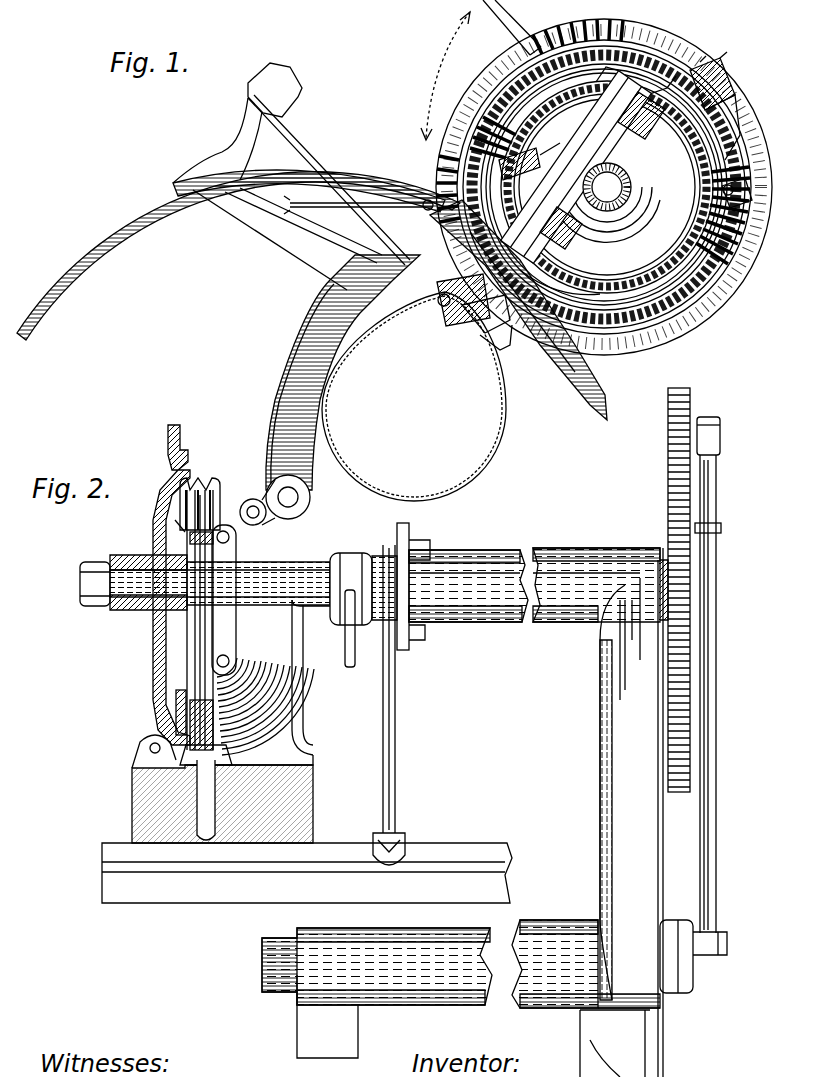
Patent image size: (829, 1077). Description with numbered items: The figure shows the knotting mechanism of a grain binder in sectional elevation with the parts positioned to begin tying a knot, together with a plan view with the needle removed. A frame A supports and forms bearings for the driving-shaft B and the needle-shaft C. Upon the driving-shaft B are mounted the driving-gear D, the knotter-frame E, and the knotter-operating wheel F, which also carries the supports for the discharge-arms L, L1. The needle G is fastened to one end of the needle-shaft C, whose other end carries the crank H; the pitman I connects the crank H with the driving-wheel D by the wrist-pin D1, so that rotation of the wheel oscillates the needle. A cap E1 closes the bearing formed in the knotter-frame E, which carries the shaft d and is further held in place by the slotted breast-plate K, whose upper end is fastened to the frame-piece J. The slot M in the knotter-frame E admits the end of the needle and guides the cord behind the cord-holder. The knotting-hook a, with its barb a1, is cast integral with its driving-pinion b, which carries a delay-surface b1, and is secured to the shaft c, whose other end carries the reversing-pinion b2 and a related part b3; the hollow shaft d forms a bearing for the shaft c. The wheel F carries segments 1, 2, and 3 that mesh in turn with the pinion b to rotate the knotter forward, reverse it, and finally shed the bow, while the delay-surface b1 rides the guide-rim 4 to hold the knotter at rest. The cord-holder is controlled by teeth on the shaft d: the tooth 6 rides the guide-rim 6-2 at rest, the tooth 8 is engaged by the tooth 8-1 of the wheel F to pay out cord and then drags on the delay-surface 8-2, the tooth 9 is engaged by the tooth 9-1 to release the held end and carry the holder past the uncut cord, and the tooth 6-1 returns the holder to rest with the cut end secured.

In FIG. 2, the frame A is at (621, 812).
In FIG. 1, the driving-shaft B is at (607, 187).
In FIG. 1, the needle-shaft C is at (330, 390).
In FIG. 2, the needle-shaft C is at (449, 989).
In FIG. 2, the driving-gear D is at (668, 486).
In FIG. 2, the wrist-pin D1 is at (712, 423).
In FIG. 1, the knotter-frame E is at (606, 225).
In FIG. 2, the knotter-frame E is at (282, 660).
In FIG. 1, the cap E1 is at (588, 165).
In FIG. 1, the knotter-operating wheel F is at (570, 266).
In FIG. 2, the knotter-operating wheel F is at (118, 560).
In FIG. 1, the needle G is at (240, 205).
In FIG. 2, the crank H is at (695, 970).
In FIG. 2, the pitman I is at (710, 708).
In FIG. 1, the frame-piece J is at (329, 164).
In FIG. 2, the frame-piece J is at (307, 873).
In FIG. 1, the slotted breast-plate K is at (309, 194).
In FIG. 2, the slotted breast-plate K is at (222, 789).
In FIG. 2, the discharge-arm L is at (350, 668).
In FIG. 1, the discharge-arm L1 is at (503, 27).
In FIG. 2, the slot M is at (238, 660).
In FIG. 1, the segment 1 is at (445, 195).
In FIG. 1, the segment 2 is at (724, 172).
In FIG. 1, the segment 3 is at (558, 60).
In FIG. 1, the guide-rim 4 is at (643, 300).
In FIG. 1, the tooth or lug 6 is at (607, 187).
In FIG. 2, the tooth or lug 6 is at (194, 530).
In FIG. 1, the tooth 6-1 is at (722, 195).
In FIG. 1, the guide-rim 6-2 is at (583, 283).
In FIG. 2, the tooth 8 is at (186, 650).
In FIG. 1, the tooth 8-1 is at (554, 151).
In FIG. 1, the delay-surface 8-2 is at (520, 164).
In FIG. 2, the tooth 9 is at (230, 660).
In FIG. 1, the tooth 9-1 is at (547, 130).
In FIG. 1, the knotting-hook a is at (445, 305).
In FIG. 2, the knotting-hook a is at (192, 762).
In FIG. 2, the barb a1 is at (220, 765).
In FIG. 1, the driving-pinion b is at (475, 320).
In FIG. 1, the delay-surface b1 is at (722, 190).
In FIG. 1, the reversing-pinion b2 is at (690, 72).
In FIG. 1, the link b3 is at (702, 129).
In FIG. 2, the knotter-shaft c is at (196, 482).
In FIG. 2, the cord-holder shaft d is at (204, 627).